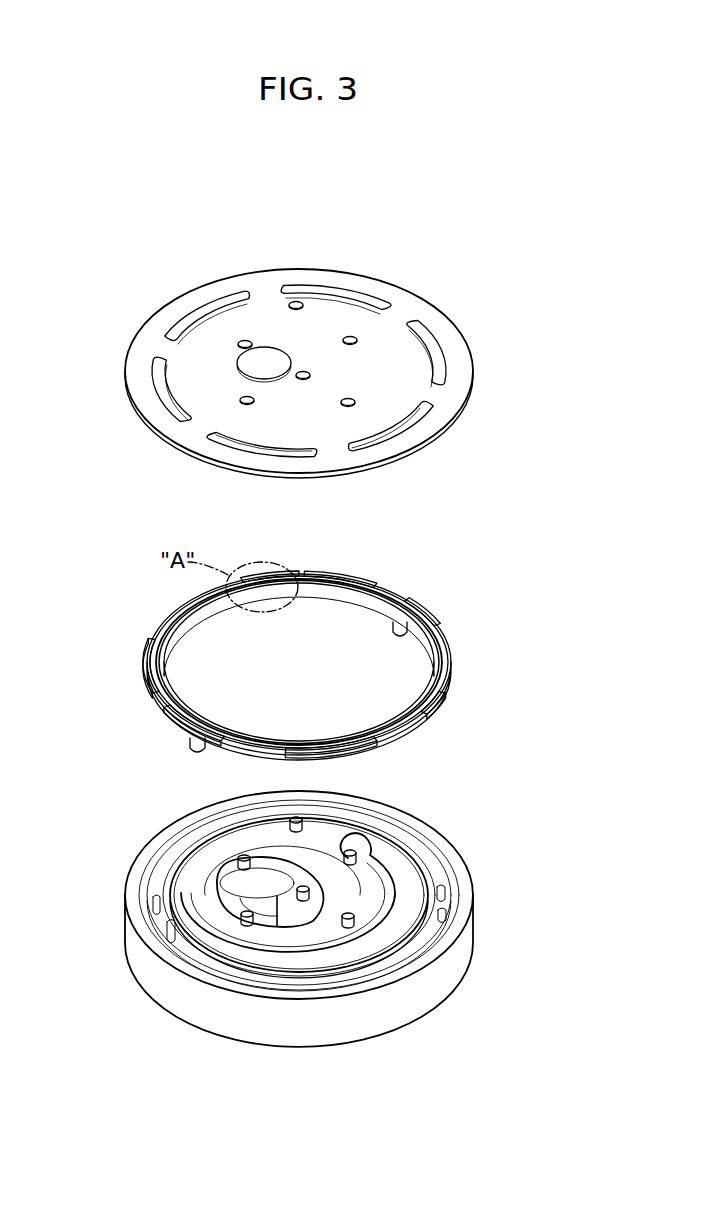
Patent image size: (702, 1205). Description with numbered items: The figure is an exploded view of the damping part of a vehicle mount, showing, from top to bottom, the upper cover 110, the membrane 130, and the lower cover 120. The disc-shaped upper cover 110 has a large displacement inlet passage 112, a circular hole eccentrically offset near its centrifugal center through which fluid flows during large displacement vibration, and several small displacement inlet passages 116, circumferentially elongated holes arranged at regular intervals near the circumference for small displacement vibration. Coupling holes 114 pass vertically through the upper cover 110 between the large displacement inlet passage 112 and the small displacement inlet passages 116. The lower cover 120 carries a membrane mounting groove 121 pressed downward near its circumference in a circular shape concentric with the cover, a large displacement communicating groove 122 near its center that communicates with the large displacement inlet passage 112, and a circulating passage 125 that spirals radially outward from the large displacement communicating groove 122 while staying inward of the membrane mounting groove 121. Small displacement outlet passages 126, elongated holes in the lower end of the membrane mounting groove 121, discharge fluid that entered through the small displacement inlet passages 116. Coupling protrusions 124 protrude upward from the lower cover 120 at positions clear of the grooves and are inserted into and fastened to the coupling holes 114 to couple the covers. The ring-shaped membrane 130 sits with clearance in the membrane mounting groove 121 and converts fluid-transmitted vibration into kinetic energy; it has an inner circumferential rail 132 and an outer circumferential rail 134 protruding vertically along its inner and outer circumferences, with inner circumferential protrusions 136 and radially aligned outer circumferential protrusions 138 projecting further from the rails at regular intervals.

The upper cover 110 is at (453, 395).
The large displacement inlet passage 112 is at (261, 357).
The coupling hole 114 is at (303, 371).
The small displacement inlet passage 116 is at (437, 348).
The lower cover 120 is at (452, 965).
The membrane mounting groove 121 is at (394, 833).
The large displacement communicating groove 122 is at (263, 880).
The coupling protrusion 124 is at (349, 928).
The circulating passage 125 is at (204, 897).
The small displacement outlet passage 126 is at (444, 915).
The membrane 130 is at (440, 658).
The inner circumferential rail 132 is at (300, 579).
The outer circumferential rail 134 is at (340, 580).
The inner circumferential protrusion 136 is at (413, 610).
The outer circumferential protrusion 138 is at (397, 593).